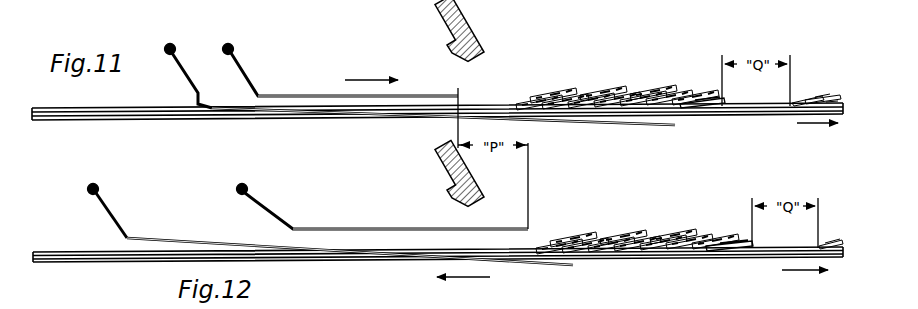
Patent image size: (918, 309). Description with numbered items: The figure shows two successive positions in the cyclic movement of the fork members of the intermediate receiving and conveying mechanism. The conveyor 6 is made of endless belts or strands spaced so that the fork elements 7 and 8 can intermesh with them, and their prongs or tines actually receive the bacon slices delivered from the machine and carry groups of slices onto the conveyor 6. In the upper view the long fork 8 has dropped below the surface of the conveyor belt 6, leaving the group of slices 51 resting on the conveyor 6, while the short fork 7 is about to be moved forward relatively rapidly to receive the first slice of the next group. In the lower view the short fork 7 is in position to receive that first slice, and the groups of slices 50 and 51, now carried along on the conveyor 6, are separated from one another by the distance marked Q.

In FIG. 11, the conveyor belt 6 is at (753, 113).
In FIG. 12, the conveyor belt 6 is at (103, 252).
In FIG. 11, the short fork 7 is at (318, 94).
In FIG. 12, the short fork 7 is at (385, 227).
In FIG. 11, the long fork 8 is at (197, 90).
In FIG. 12, the long fork 8 is at (155, 237).
In FIG. 11, the group of slices 50 is at (806, 94).
In FIG. 12, the group of slices 50 is at (823, 241).
In FIG. 11, the group of slices 51 is at (585, 92).
In FIG. 12, the group of slices 51 is at (668, 232).